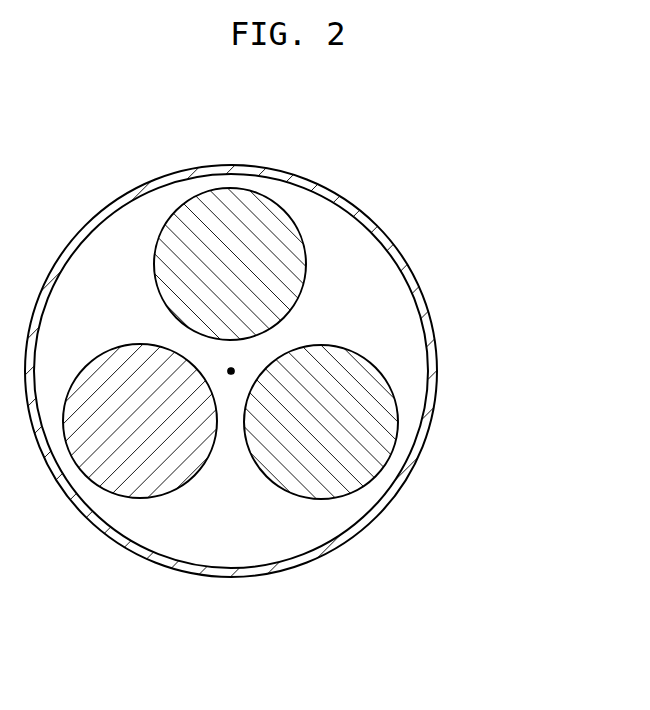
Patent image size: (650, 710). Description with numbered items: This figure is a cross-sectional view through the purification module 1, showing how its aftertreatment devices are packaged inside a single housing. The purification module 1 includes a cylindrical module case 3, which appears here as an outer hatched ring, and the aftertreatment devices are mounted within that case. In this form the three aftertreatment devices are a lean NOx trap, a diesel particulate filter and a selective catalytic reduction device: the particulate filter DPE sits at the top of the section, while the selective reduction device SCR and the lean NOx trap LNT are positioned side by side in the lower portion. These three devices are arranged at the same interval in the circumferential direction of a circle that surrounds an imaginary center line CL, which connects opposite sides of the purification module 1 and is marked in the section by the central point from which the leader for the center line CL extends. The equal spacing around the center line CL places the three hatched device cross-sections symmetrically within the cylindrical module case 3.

The purification module 1 is at (286, 420).
The module case 3 is at (433, 372).
The DPF DPE is at (230, 264).
The element SCR is at (140, 421).
The element LNT is at (321, 422).
The center line CL is at (230, 372).